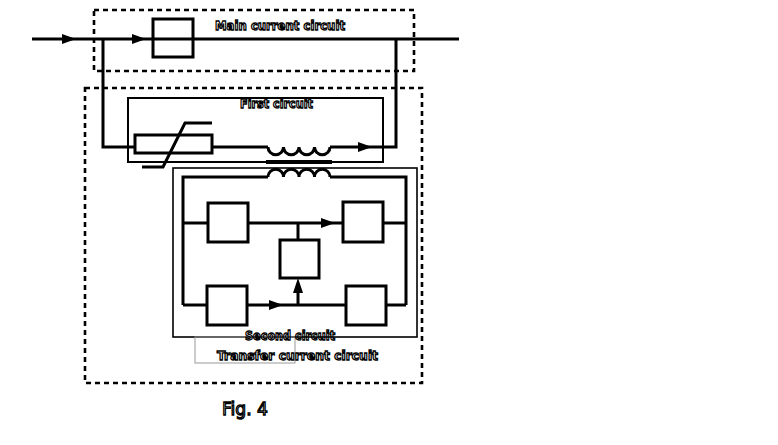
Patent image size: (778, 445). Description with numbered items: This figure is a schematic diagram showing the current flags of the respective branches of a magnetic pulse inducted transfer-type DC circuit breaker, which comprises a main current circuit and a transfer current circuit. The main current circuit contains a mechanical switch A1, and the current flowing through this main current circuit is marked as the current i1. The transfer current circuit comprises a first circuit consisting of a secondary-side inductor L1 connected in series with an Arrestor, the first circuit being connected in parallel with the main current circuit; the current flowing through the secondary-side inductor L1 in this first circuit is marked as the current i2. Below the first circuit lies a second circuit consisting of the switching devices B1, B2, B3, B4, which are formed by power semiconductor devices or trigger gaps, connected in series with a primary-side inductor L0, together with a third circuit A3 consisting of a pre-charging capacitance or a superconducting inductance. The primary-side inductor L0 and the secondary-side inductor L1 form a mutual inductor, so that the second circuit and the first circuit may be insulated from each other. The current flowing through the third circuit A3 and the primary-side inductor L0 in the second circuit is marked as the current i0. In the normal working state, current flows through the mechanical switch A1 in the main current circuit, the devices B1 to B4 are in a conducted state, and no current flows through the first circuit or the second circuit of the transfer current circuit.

The mechanical switch A1 is at (173, 38).
The third circuit A3 is at (299, 264).
The thyristor B1 is at (228, 222).
The thyristor B2 is at (363, 222).
The thyristor B3 is at (227, 305).
The thyristor B4 is at (366, 305).
The secondary-side inductor L1 is at (299, 143).
The primary-side inductor L0 is at (299, 186).
The current flowing through the third circuit and primary-side inductor i0 is at (296, 295).
The current flowing through the main current circuit i1 is at (245, 32).
The current flowing through the secondary-side inductor i2 is at (116, 103).
The arrestor Arrestor is at (173, 136).